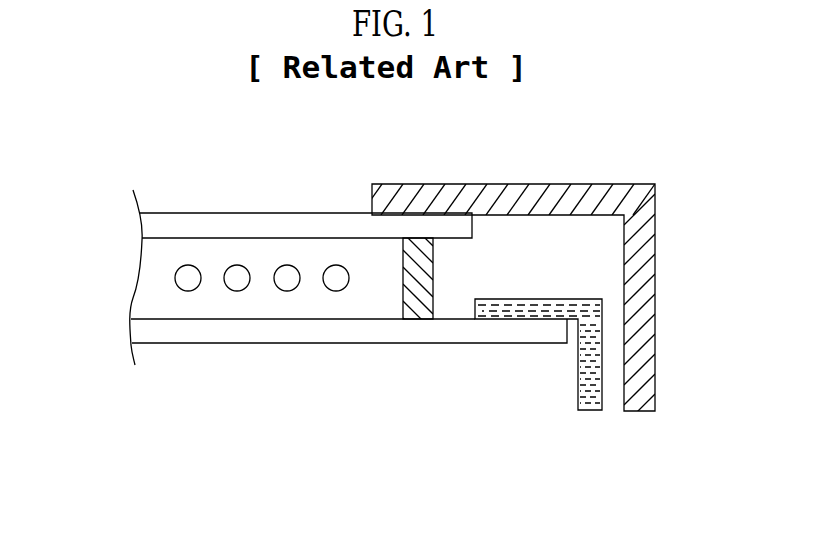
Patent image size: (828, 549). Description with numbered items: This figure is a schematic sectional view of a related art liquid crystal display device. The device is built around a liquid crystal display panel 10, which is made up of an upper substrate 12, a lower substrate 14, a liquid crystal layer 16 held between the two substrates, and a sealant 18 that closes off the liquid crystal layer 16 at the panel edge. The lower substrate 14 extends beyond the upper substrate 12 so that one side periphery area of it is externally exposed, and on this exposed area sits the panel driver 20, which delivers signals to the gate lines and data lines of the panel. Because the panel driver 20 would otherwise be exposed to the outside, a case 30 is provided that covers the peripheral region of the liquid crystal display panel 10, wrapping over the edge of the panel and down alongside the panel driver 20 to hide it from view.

The liquid crystal display panel 10 is at (329, 313).
The upper substrate 12 is at (163, 238).
The lower substrate 14 is at (213, 343).
The liquid crystal layer 16 is at (287, 279).
The sealant 18 is at (381, 308).
The panel driver 20 is at (593, 410).
The case 30 is at (643, 365).